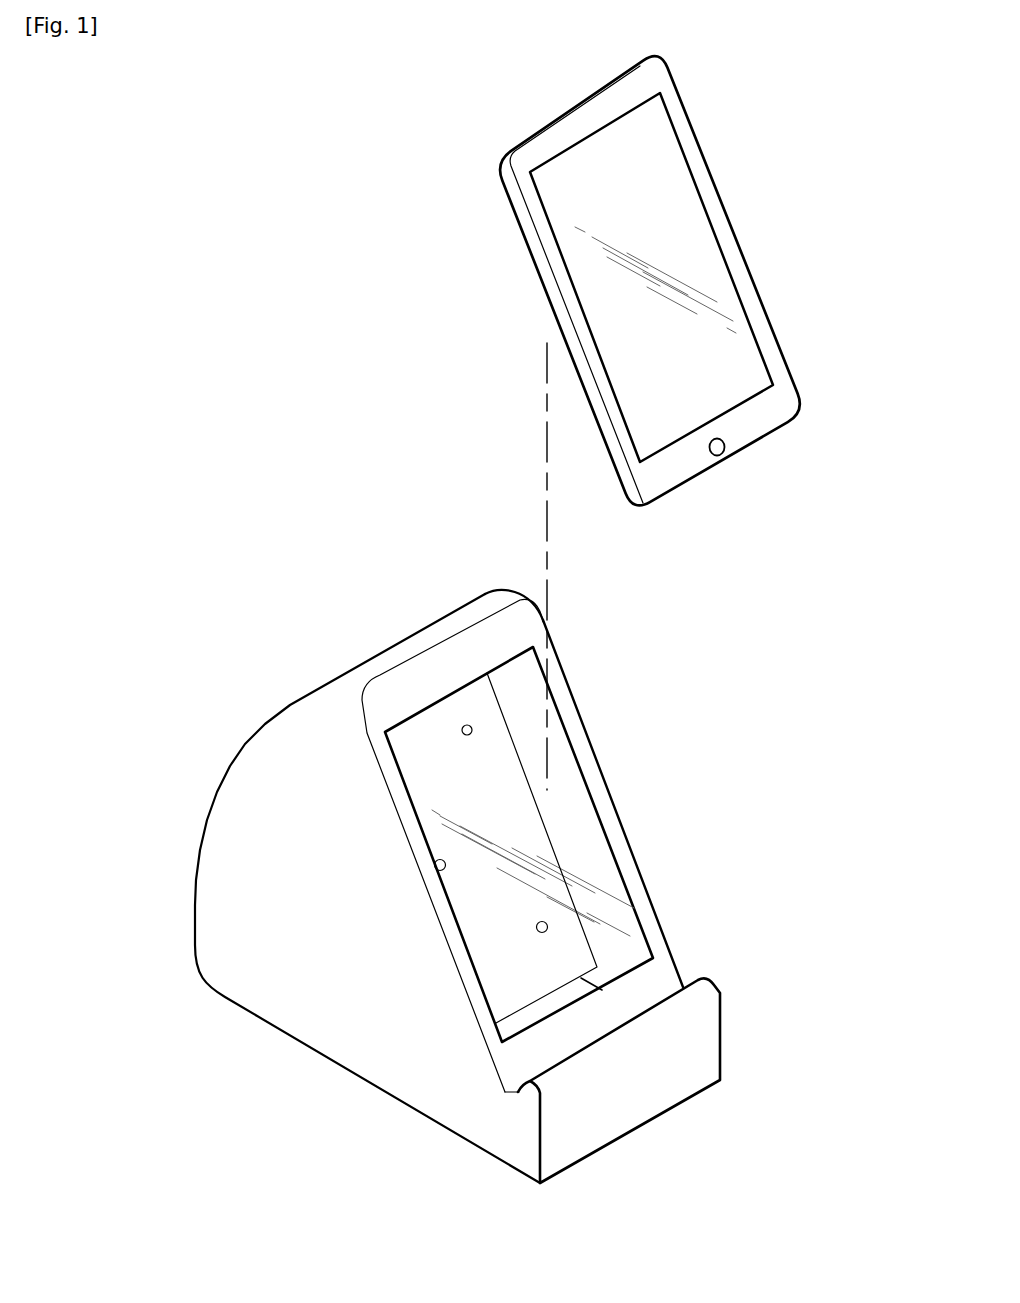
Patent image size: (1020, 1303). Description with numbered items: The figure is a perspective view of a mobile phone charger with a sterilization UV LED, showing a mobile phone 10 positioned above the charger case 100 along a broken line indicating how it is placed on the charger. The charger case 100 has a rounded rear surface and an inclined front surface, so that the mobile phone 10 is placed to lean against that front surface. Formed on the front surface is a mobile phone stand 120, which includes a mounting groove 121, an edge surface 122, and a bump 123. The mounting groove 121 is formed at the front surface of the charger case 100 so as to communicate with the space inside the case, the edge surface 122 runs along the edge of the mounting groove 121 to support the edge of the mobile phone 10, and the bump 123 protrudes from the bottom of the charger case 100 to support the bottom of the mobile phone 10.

The mobile phone 10 is at (713, 203).
The charger case 100 is at (283, 868).
The mobile phone stand 120 is at (595, 891).
The mounting groove 121 is at (559, 806).
The edge surface 122 is at (520, 627).
The bump 123 is at (636, 1005).